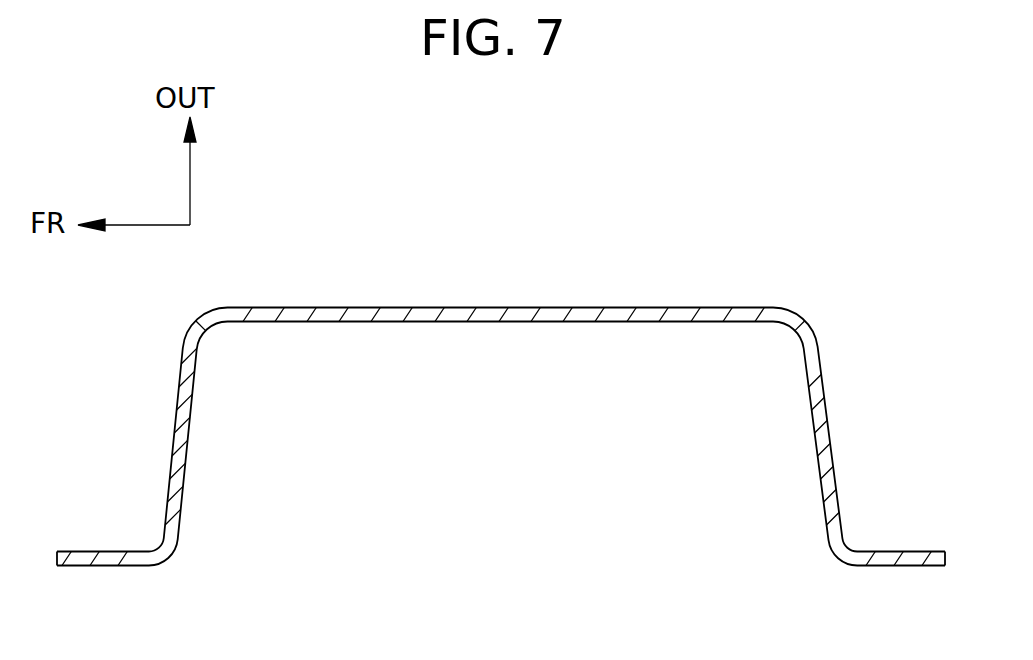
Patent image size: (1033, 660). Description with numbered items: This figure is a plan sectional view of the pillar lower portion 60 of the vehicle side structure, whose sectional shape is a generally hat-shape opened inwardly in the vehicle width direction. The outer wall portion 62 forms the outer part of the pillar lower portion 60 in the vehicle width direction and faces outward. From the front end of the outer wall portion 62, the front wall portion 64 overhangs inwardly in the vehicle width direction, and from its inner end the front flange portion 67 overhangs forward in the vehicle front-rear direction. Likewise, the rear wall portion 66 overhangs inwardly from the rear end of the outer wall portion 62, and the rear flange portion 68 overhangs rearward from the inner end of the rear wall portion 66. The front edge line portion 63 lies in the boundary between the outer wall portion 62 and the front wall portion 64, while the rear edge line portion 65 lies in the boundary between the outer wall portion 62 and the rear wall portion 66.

The pillar lower portion 60 is at (726, 250).
The outer wall portion 62 is at (543, 307).
The front edge line portion 63 is at (200, 318).
The front wall portion 64 is at (175, 430).
The rear edge line portion 65 is at (805, 318).
The rear wall portion 66 is at (830, 430).
The front flange portion 67 is at (78, 552).
The rear flange portion 68 is at (930, 552).